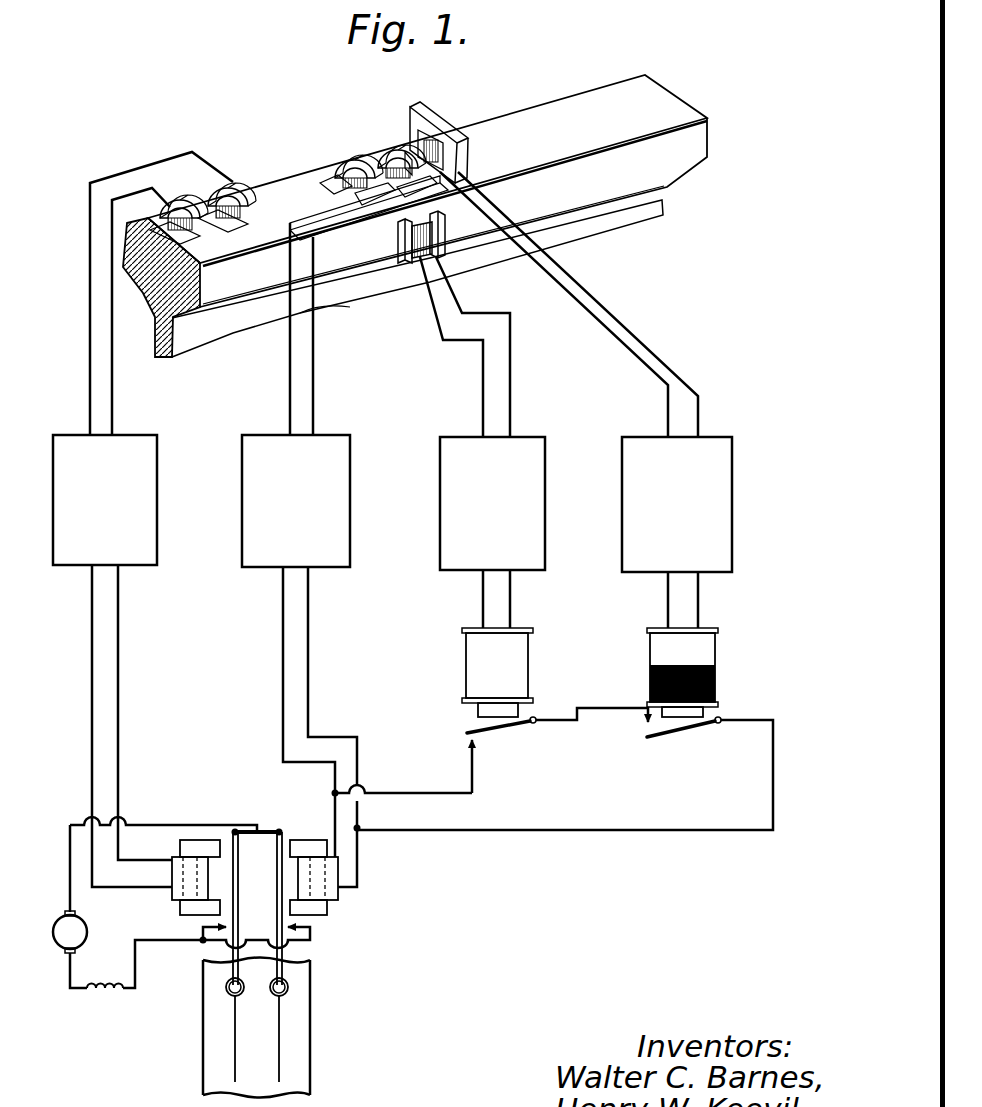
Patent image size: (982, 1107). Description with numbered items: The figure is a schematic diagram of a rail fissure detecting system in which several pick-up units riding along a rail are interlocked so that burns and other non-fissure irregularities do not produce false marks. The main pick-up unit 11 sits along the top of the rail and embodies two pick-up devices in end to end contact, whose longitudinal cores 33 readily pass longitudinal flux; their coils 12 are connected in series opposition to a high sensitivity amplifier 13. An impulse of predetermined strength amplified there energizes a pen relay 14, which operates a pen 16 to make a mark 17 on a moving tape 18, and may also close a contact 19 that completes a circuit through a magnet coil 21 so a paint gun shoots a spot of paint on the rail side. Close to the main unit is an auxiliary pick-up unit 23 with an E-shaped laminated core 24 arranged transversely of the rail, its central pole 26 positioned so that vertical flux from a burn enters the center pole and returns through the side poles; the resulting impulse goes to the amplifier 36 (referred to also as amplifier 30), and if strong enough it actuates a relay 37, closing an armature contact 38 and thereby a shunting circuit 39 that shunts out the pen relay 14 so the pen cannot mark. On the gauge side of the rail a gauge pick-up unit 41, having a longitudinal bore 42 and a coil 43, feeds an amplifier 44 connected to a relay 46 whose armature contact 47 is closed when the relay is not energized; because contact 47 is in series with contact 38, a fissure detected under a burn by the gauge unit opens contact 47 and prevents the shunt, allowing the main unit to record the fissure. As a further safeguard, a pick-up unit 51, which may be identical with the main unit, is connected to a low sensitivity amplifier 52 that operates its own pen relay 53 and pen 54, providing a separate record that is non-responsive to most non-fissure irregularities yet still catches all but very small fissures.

The main pick-up unit 11 is at (370, 136).
The coils 12 is at (352, 148).
The high sensitivity amplifier 13 is at (340, 452).
The pen relay 14 is at (330, 895).
The pen 16 is at (292, 987).
The mark 17 is at (286, 1066).
The moving tape 18 is at (300, 1075).
The contact 19 is at (290, 928).
The magnet coil 21 is at (104, 982).
The auxiliary pick-up unit 23 is at (434, 105).
The E-shaped laminated core 24 is at (438, 122).
The central pole 26 is at (468, 148).
The amplifier 30 is at (446, 150).
The longitudinal cores 33 is at (337, 173).
The amplifier 36 is at (720, 448).
The relay 37 is at (697, 643).
The armature contact 38 is at (667, 738).
The shunting circuit 39 is at (773, 783).
The gauge pick-up unit 41 is at (452, 234).
The longitudinal bore 42 is at (398, 240).
The coil 43 is at (426, 262).
The amplifier 44 is at (537, 450).
The relay 46 is at (522, 643).
The armature contact 47 is at (496, 733).
The pick-up unit 51 is at (198, 190).
The low sensitivity amplifier 52 is at (150, 452).
The pen relay 53 is at (175, 857).
The pen 54 is at (224, 987).